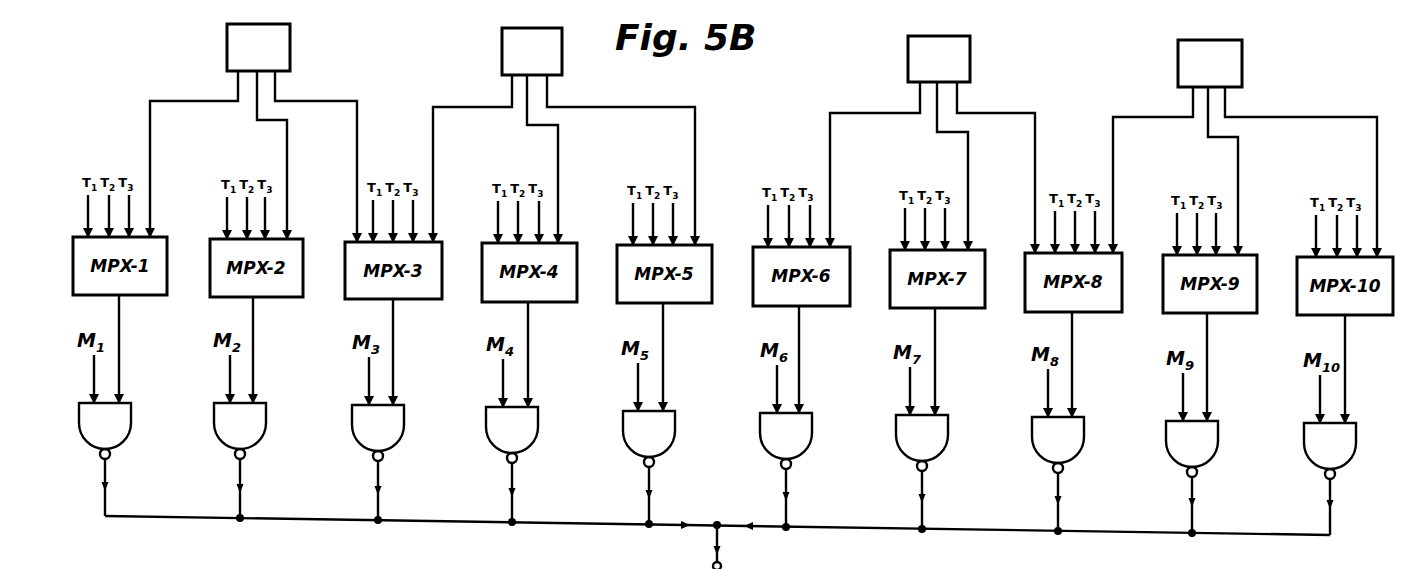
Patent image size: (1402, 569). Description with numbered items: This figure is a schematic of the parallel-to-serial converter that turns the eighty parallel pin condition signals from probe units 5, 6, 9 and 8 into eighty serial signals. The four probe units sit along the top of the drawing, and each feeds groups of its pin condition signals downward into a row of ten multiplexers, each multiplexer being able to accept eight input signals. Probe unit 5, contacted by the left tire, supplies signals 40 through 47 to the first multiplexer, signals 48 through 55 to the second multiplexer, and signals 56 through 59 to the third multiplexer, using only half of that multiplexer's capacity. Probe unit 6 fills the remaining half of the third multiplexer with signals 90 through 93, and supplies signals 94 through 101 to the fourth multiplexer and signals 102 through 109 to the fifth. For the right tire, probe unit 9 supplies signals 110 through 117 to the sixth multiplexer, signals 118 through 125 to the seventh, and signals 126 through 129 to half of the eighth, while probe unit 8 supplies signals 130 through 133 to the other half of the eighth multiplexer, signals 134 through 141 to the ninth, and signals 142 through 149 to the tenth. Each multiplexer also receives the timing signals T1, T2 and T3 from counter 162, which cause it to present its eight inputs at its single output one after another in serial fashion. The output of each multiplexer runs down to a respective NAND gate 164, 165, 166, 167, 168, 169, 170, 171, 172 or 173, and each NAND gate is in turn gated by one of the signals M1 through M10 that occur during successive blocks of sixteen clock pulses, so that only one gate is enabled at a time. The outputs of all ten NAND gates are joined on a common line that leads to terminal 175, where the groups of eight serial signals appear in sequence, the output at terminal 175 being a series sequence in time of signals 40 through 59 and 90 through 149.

The probe unit 5 is at (258, 47).
The probe unit 6 is at (532, 51).
The probe unit 9 is at (939, 59).
The probe unit 8 is at (1210, 63).
The pin condition indication signal 40 is at (194, 154).
The pin condition indication signal 47 is at (170, 142).
The pin condition indication signal 48 is at (290, 155).
The pin condition indication signal 55 is at (308, 142).
The pin condition indication signal 56 is at (333, 156).
The pin condition indication signal 59 is at (377, 142).
The pin condition indication signal 90 is at (472, 158).
The pin condition indication signal 93 is at (455, 145).
The pin condition indication signal 94 is at (565, 159).
The pin condition indication signal 101 is at (582, 145).
The pin condition indication signal 102 is at (644, 160).
The pin condition indication signal 109 is at (720, 148).
The pin condition indication signal 110 is at (875, 164).
The pin condition indication signal 117 is at (852, 150).
The pin condition indication signal 118 is at (973, 166).
The pin condition indication signal 125 is at (988, 150).
The pin condition indication signal 126 is at (1019, 167).
The pin condition indication signal 129 is at (1060, 153).
The pin condition indication signal 130 is at (1153, 170).
The pin condition indication signal 133 is at (1135, 156).
The pin condition indication signal 134 is at (1244, 171).
The pin condition indication signal 141 is at (1258, 156).
The pin condition indication signal 142 is at (1301, 172).
The pin condition indication signal 149 is at (1348, 157).
The NAND gate 164 is at (123, 433).
The NAND gate 165 is at (258, 433).
The NAND gate 166 is at (396, 435).
The NAND gate 167 is at (530, 437).
The NAND gate 168 is at (667, 441).
The NAND gate 169 is at (804, 443).
The NAND gate 170 is at (940, 445).
The NAND gate 171 is at (1076, 447).
The NAND gate 172 is at (1210, 451).
The NAND gate 173 is at (1348, 453).
The counter 162 is at (717, 541).
The terminal 175 is at (722, 564).